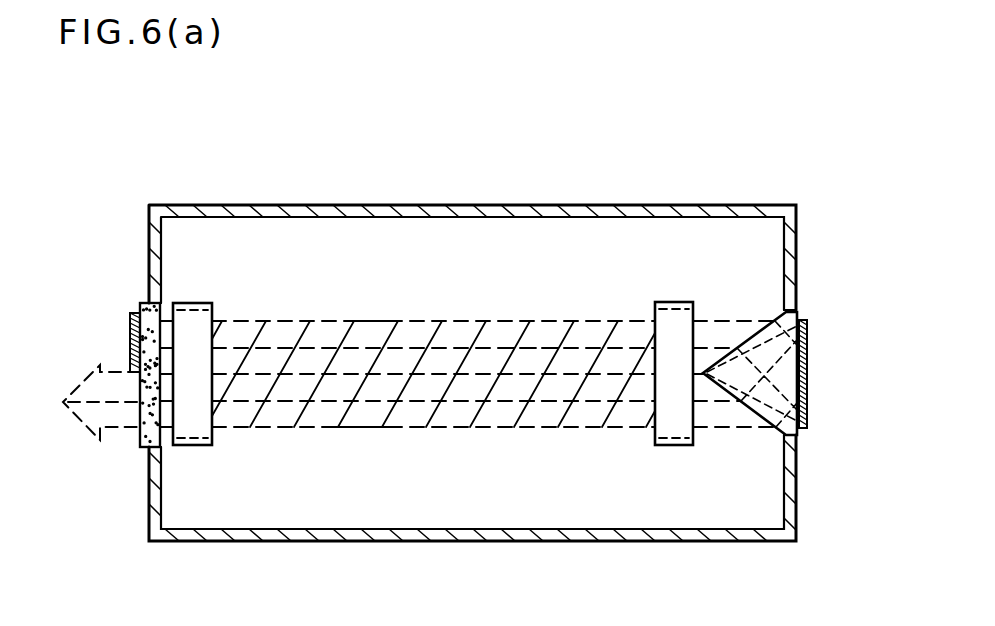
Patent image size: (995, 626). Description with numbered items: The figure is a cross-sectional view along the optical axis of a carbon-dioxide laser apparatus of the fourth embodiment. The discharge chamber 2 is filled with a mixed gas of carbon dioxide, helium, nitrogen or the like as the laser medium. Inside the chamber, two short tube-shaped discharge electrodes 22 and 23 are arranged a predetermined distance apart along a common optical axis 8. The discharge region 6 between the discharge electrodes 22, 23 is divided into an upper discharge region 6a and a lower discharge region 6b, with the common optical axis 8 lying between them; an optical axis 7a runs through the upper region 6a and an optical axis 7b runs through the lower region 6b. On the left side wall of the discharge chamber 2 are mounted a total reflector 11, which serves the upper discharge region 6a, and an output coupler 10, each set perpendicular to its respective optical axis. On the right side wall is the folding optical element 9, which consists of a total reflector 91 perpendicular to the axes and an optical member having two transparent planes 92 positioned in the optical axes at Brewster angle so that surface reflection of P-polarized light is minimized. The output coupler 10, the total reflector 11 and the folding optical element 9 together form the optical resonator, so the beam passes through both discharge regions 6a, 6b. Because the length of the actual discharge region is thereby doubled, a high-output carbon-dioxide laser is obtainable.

The discharge chamber 2 is at (283, 206).
The discharge region 6 is at (468, 373).
The upper discharge region 6a is at (357, 321).
The lower discharge region 6b is at (370, 430).
The optical axis 7a is at (537, 348).
The optical axis 7b is at (553, 403).
The common optical axis 8 is at (437, 370).
The folding optical element 9 is at (805, 320).
The total reflector 91 is at (807, 380).
The optical member having two transparent planes 92 is at (745, 325).
The output coupler 10 is at (140, 441).
The total reflector 11 is at (132, 313).
The discharge electrode 22 is at (200, 303).
The discharge electrode 23 is at (674, 302).